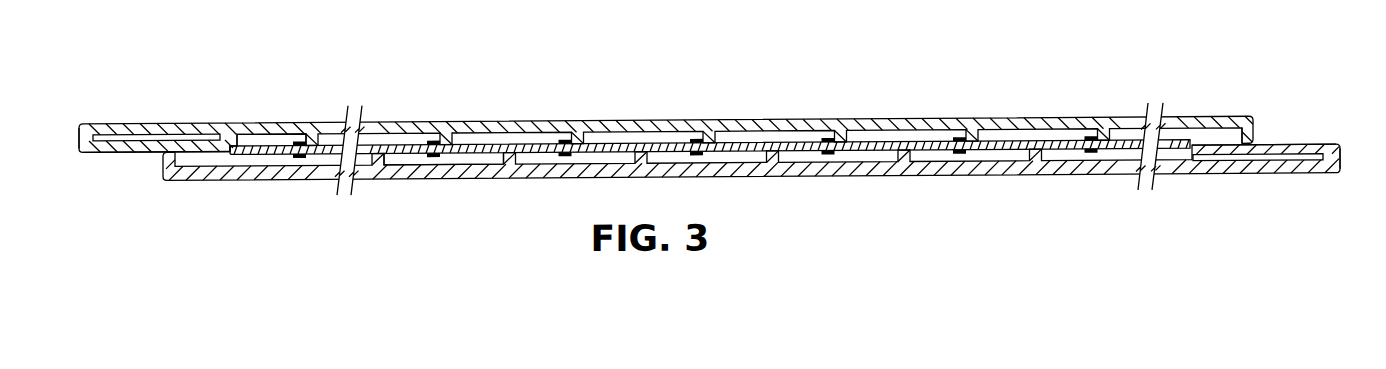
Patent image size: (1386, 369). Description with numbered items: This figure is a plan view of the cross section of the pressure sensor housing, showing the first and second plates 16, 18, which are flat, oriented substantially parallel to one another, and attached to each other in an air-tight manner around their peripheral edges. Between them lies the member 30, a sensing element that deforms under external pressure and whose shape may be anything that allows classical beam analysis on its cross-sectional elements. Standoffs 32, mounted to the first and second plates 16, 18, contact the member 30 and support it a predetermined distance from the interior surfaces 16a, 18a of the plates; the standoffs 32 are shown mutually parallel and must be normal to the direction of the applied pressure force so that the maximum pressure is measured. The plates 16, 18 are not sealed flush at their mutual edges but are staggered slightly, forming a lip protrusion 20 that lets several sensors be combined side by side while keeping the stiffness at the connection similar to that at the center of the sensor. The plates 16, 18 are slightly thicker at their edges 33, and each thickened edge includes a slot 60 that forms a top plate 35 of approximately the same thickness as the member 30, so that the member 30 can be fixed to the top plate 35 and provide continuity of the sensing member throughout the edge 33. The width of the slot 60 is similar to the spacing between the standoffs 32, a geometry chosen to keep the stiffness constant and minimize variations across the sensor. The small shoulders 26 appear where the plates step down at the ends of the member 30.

The first plate 16 is at (230, 182).
The interior surface of first plate 16a is at (413, 163).
The second plate 18 is at (242, 124).
The interior surface of second plate 18a is at (286, 141).
The lip protrusion 20 is at (697, 128).
The shoulder 26 is at (230, 154).
The member 30 is at (270, 152).
The standoffs 32 is at (566, 144).
The edge 33 is at (81, 133).
The top plate 35 is at (113, 154).
The slot 60 is at (126, 139).